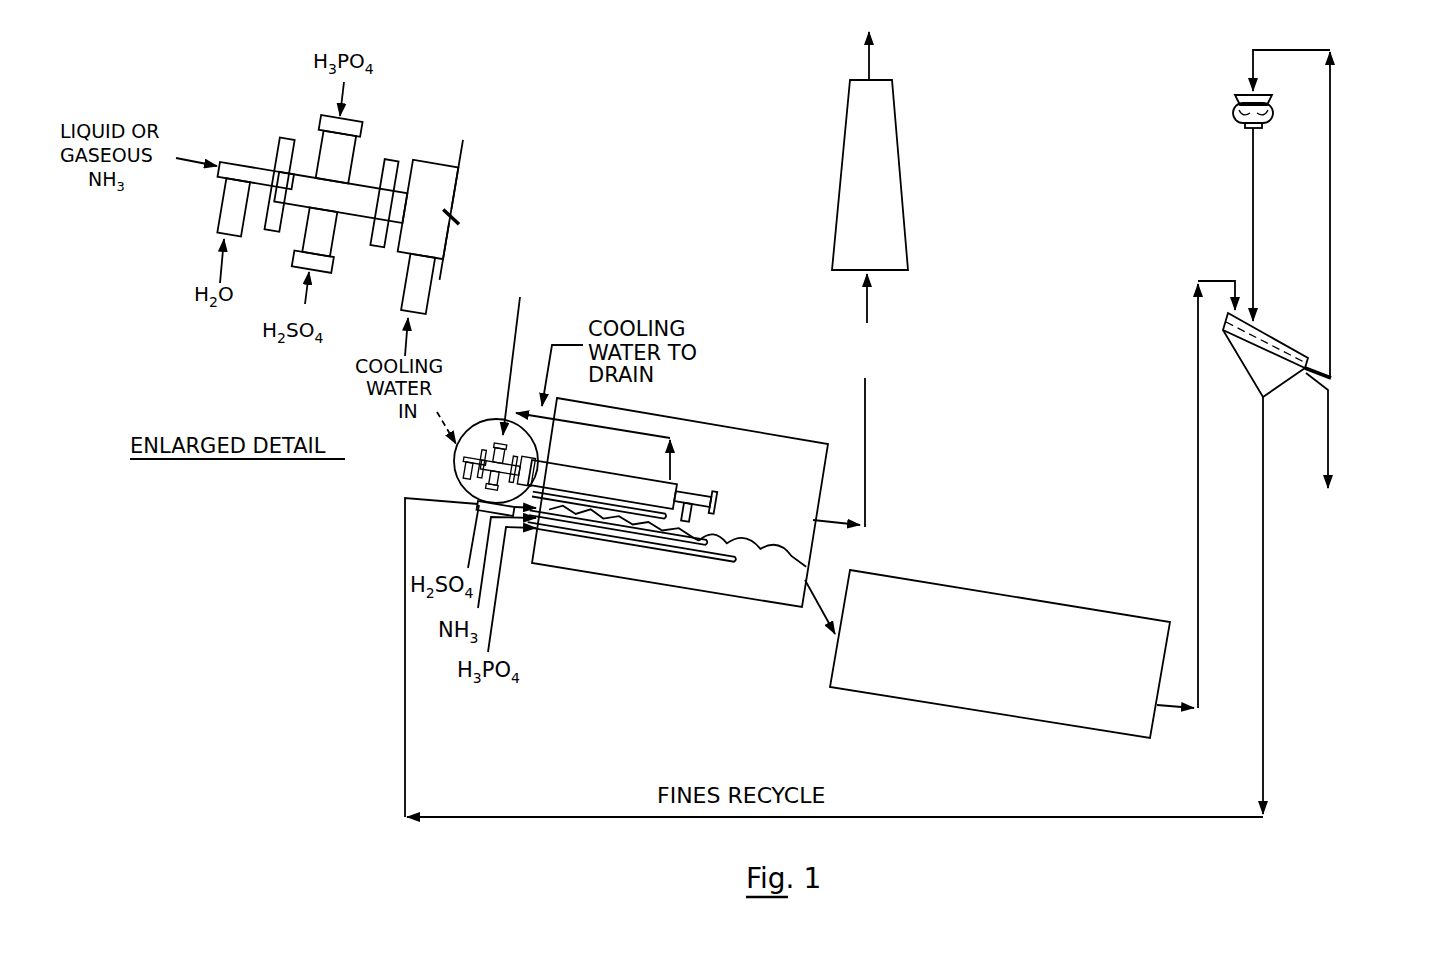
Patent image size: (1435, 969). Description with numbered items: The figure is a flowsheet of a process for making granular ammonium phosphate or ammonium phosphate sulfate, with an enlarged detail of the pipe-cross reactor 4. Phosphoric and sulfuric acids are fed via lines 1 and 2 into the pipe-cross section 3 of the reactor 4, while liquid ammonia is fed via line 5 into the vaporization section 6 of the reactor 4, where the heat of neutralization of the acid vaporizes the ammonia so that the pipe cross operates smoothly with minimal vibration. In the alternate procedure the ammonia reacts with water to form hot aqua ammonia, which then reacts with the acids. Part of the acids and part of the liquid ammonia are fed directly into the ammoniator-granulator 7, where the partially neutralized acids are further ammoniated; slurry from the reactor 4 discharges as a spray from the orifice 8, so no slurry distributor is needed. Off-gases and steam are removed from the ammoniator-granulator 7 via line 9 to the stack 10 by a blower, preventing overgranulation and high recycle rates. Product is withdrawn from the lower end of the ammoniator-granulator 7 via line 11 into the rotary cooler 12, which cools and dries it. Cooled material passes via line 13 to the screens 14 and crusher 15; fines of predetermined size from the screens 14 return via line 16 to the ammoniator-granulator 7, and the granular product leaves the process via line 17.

The line 1 is at (518, 346).
The line 2 is at (331, 237).
The pipe-cross section 3 is at (310, 173).
The reactor 4 is at (478, 445).
The line 5 is at (184, 156).
The vaporization section 6 is at (222, 178).
The ammoniator-granulator 7 is at (640, 583).
The orifice 8 is at (693, 523).
The line 9 is at (867, 460).
The stack 10 is at (907, 213).
The line 11 is at (822, 617).
The rotary cooler 12 is at (940, 708).
The line 13 is at (1198, 403).
The screens 14 is at (1273, 335).
The crusher 15 is at (1233, 108).
The line 16 is at (1263, 730).
The line 17 is at (1330, 423).